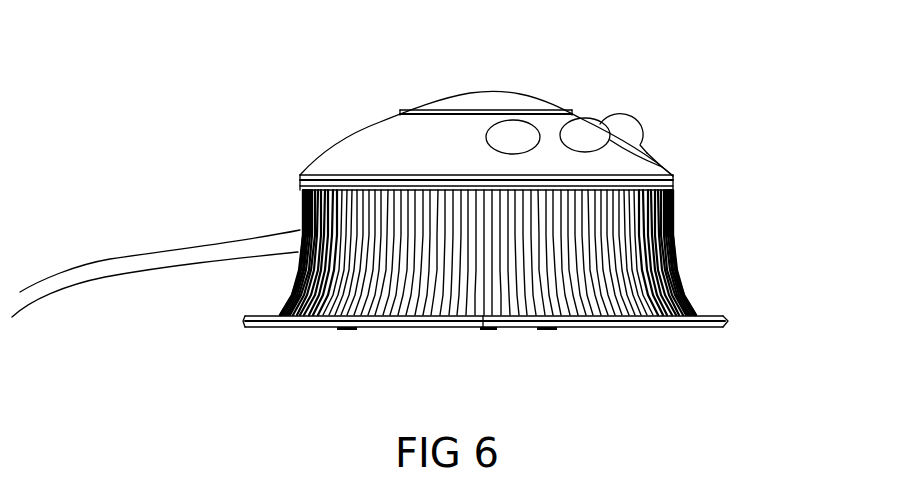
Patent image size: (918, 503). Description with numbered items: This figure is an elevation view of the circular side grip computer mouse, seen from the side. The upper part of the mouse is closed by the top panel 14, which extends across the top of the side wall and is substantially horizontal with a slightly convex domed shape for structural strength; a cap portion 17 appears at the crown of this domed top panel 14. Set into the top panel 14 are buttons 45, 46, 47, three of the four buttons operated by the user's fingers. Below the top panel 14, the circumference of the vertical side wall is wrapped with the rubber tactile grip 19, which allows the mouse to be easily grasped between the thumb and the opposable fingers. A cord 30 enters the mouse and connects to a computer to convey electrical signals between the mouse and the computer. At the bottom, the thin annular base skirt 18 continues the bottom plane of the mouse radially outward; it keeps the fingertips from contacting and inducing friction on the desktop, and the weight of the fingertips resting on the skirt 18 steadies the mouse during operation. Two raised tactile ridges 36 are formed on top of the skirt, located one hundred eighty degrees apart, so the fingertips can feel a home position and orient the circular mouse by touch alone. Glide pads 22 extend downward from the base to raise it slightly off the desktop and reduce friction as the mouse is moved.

The top panel 14 is at (343, 140).
The top cover plate 17 is at (458, 95).
The base skirt 18 is at (727, 324).
The rubber tactile grip 19 is at (670, 267).
The glide pads 22 is at (557, 328).
The cord 30 is at (152, 252).
The raised tactile ridges 36 is at (483, 316).
The button 45 is at (535, 128).
The button 46 is at (665, 167).
The button 47 is at (630, 128).